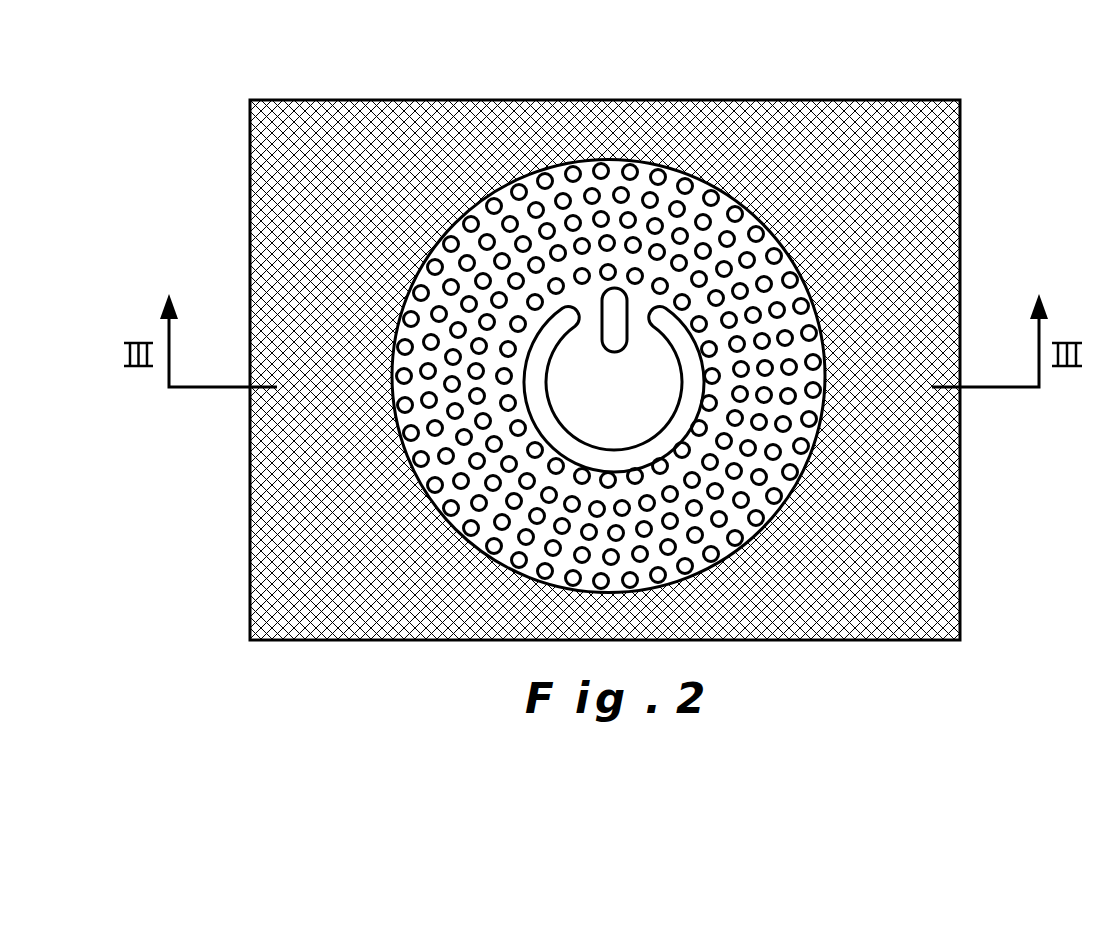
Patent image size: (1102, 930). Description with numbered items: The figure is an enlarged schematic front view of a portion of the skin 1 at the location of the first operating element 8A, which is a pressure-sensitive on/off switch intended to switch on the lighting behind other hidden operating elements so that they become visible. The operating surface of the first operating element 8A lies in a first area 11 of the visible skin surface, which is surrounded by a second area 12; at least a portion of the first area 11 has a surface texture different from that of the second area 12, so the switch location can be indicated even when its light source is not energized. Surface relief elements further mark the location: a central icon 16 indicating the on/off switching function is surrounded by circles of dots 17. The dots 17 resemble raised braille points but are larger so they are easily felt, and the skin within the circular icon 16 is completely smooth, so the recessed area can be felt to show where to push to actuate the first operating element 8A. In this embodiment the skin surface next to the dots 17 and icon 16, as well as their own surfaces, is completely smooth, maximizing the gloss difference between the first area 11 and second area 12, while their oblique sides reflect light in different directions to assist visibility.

The skin 1 is at (665, 371).
The first operating element 8A is at (517, 537).
The first area 11 is at (788, 458).
The second area 12 is at (893, 555).
The central icon 16 is at (683, 352).
The dots 17 is at (697, 562).